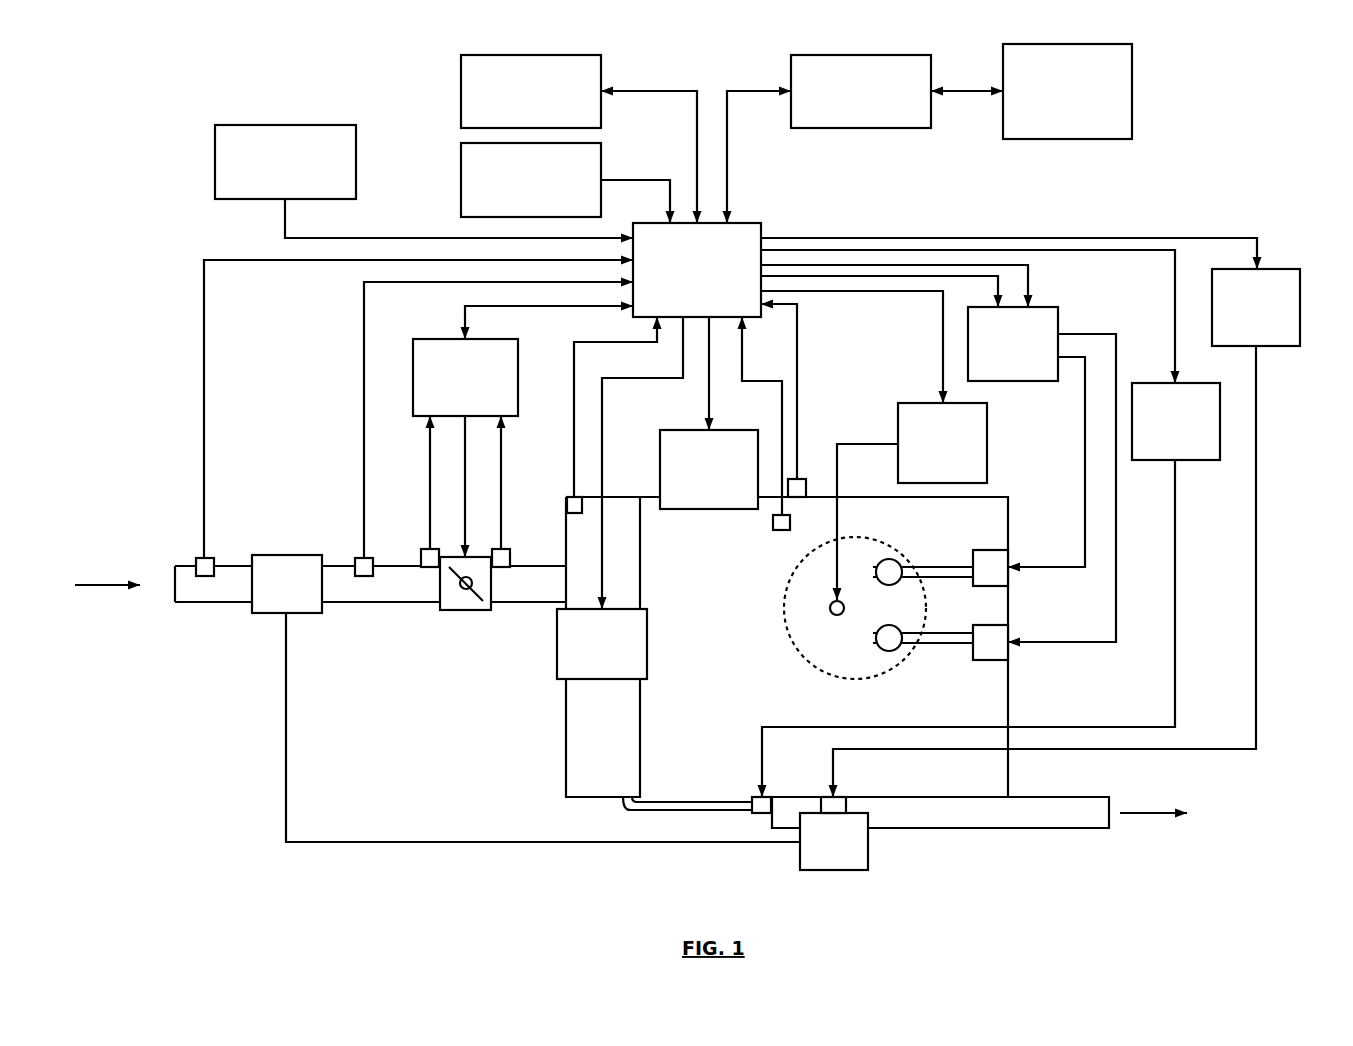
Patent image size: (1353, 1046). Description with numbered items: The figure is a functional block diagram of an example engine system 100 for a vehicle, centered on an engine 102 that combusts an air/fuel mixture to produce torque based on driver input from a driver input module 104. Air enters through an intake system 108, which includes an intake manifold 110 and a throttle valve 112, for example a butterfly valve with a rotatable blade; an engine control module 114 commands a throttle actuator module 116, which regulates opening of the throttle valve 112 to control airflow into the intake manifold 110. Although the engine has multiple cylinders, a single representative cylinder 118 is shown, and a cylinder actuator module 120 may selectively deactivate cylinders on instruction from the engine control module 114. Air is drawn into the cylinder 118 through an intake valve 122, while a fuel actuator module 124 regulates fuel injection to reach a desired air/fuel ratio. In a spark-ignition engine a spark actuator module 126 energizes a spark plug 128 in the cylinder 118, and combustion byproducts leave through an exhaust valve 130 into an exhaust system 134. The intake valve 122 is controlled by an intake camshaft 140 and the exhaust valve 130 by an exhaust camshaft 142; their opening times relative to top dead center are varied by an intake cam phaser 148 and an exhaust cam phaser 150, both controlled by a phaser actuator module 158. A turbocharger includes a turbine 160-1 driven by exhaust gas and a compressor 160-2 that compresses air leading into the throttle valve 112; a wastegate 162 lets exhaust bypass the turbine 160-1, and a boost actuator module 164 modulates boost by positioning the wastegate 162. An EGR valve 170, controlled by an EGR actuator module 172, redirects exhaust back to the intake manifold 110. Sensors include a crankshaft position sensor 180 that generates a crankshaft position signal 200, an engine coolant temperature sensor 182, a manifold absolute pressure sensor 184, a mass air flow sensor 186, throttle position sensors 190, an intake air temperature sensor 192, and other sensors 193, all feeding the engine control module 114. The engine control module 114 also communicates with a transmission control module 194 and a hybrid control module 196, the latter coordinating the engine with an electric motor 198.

The engine system 100 is at (146, 116).
The engine 102 is at (1010, 512).
The driver input module 104 is at (461, 180).
The intake system 108 is at (168, 638).
The intake manifold 110 is at (566, 727).
The throttle valve 112 is at (460, 610).
The engine control module 114 is at (762, 228).
The throttle actuator module 116 is at (445, 339).
The cylinder 118 is at (808, 668).
The cylinder actuator module 120 is at (722, 430).
The intake valve 122 is at (892, 556).
The fuel actuator module 124 is at (628, 679).
The spark actuator module 126 is at (990, 443).
The spark plug 128 is at (830, 608).
The exhaust valve 130 is at (888, 652).
The exhaust system 134 is at (1080, 832).
The intake camshaft 140 is at (948, 567).
The exhaust camshaft 142 is at (950, 645).
The intake cam phaser 148 is at (990, 550).
The exhaust cam phaser 150 is at (990, 660).
The phaser actuator module 158 is at (1058, 315).
The turbine 160-1 is at (870, 845).
The compressor 160-2 is at (270, 613).
The wastegate 162 is at (848, 800).
The boost actuator module 164 is at (1280, 346).
The EGR valve 170 is at (762, 815).
The EGR actuator module 172 is at (1195, 460).
The crankshaft position sensor 180 is at (800, 479).
The engine coolant temperature sensor 182 is at (782, 530).
The manifold absolute pressure sensor 184 is at (566, 497).
The mass air flow sensor 186 is at (355, 558).
The throttle position sensors 190 is at (427, 567).
The intake air temperature sensor 192 is at (200, 558).
The other sensors 193 is at (285, 125).
The transmission control module 194 is at (461, 114).
The hybrid control module 196 is at (868, 128).
The electric motor 198 is at (1080, 139).
The crankshaft position signal 200 is at (798, 395).